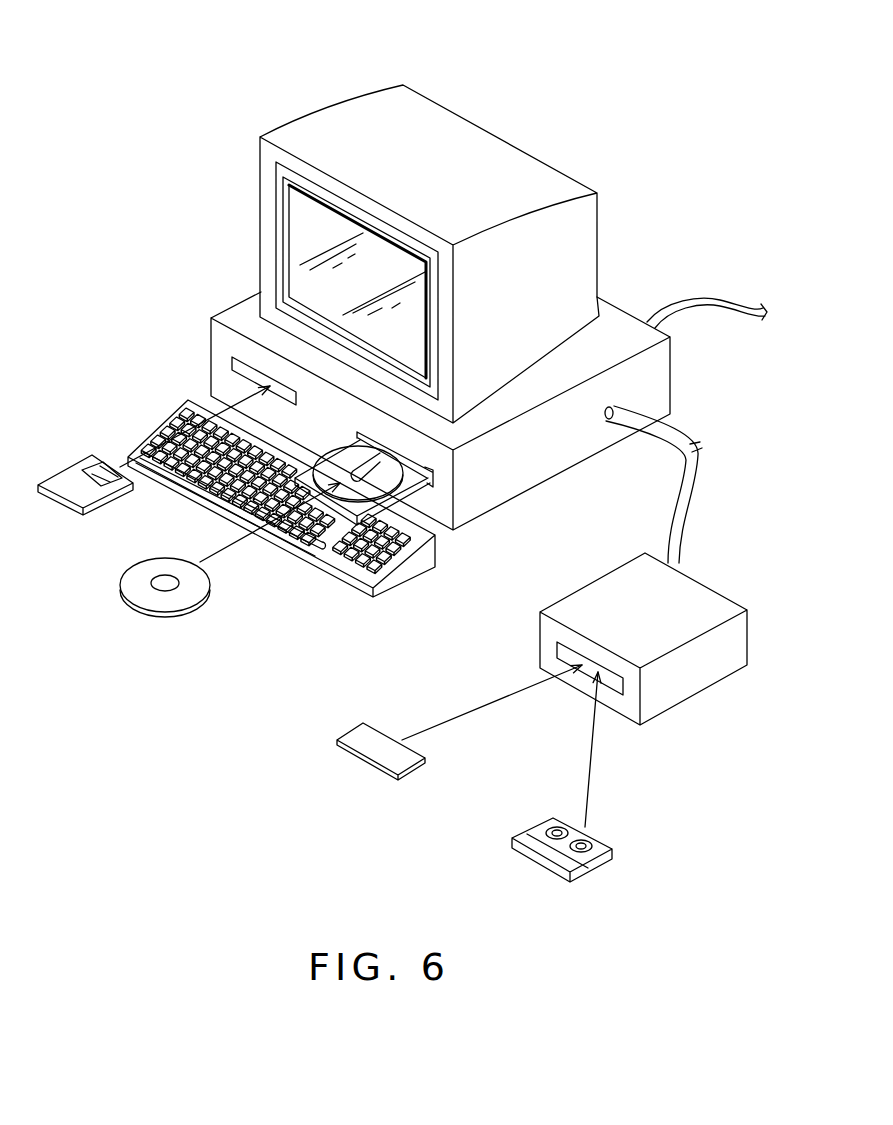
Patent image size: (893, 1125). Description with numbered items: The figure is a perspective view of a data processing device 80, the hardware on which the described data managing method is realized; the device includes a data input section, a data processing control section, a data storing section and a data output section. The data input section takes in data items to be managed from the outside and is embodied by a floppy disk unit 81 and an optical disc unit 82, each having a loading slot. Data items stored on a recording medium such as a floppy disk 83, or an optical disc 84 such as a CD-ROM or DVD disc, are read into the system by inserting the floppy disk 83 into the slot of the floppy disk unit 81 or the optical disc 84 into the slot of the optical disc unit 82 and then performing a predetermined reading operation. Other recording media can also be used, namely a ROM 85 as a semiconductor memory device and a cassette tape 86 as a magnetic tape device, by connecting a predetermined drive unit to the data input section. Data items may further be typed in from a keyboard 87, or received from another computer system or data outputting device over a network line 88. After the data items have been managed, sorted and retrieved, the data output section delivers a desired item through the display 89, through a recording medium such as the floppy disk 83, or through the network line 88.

The data processing device 80 is at (520, 105).
The floppy disk unit 81 is at (225, 362).
The optical disc unit 82 is at (433, 478).
The floppy disk 83 is at (68, 483).
The optical disc 84 is at (160, 602).
The ROM 85 is at (372, 748).
The cassette tape 86 is at (543, 852).
The keyboard 87 is at (383, 572).
The network line 88 is at (697, 305).
The display 89 is at (578, 253).